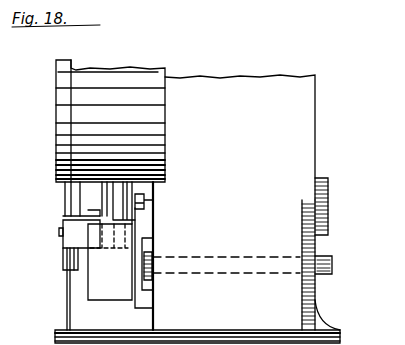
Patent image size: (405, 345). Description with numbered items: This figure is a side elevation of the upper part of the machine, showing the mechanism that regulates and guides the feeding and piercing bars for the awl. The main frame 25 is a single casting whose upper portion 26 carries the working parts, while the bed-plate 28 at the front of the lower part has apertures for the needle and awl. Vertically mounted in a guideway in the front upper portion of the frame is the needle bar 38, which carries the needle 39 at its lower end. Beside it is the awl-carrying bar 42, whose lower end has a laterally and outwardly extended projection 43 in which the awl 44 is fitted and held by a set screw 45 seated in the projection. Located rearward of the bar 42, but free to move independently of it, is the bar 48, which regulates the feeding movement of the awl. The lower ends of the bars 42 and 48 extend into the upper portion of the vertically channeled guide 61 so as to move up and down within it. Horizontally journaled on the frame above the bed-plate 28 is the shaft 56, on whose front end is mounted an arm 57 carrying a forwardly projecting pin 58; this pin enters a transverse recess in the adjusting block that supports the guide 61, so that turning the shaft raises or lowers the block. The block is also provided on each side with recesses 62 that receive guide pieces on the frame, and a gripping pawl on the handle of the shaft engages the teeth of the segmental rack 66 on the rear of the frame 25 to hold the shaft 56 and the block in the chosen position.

The main frame 25 is at (234, 202).
The upper portion of the frame 26 is at (58, 101).
The bed-plate 28 is at (60, 330).
The needle bar 38 is at (68, 196).
The needle 39 is at (67, 300).
The awl-carrying bar 42 is at (105, 200).
The projection 43 is at (76, 241).
The awl 44 is at (66, 279).
The set screw 45 is at (59, 231).
The feeding bar 48 is at (128, 191).
The shaft 56 is at (331, 268).
The arm 57 is at (153, 281).
The pin 58 is at (140, 268).
The guide 61 is at (110, 262).
The recesses 62 is at (146, 203).
The segmental rack 66 is at (308, 233).